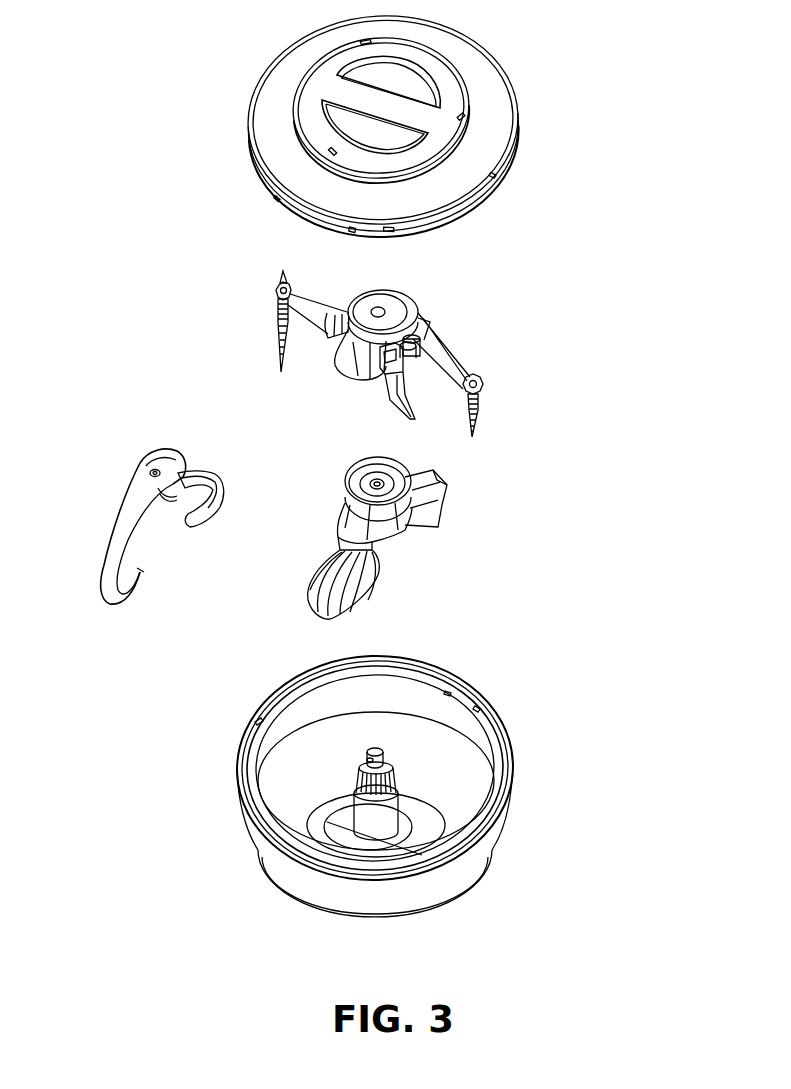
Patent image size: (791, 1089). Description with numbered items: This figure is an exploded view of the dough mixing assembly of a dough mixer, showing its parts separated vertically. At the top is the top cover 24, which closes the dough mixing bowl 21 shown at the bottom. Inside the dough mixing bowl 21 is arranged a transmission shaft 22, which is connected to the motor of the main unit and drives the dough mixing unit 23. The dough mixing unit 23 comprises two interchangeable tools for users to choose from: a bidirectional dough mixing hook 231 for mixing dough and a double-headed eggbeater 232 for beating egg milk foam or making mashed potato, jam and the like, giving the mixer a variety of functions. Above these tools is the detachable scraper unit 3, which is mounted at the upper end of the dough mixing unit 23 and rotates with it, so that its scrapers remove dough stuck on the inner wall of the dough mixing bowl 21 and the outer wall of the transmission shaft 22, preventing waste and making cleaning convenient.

The top cover 24 is at (275, 127).
The scraper unit 3 is at (390, 314).
The dough mixing unit 23 is at (423, 539).
The double-headed eggbeater 232 is at (392, 495).
The bidirectional dough mixing hook 231 is at (125, 503).
The dough mixing bowl 21 is at (288, 788).
The transmission shaft 22 is at (393, 765).